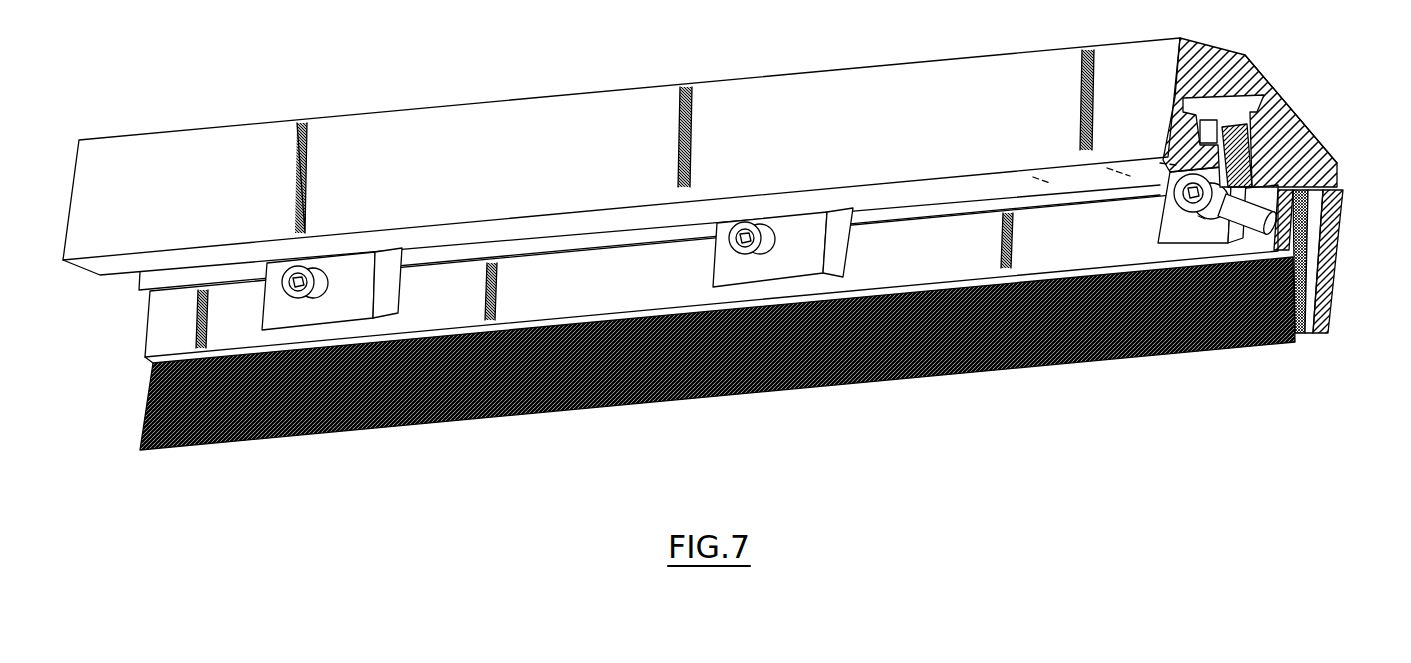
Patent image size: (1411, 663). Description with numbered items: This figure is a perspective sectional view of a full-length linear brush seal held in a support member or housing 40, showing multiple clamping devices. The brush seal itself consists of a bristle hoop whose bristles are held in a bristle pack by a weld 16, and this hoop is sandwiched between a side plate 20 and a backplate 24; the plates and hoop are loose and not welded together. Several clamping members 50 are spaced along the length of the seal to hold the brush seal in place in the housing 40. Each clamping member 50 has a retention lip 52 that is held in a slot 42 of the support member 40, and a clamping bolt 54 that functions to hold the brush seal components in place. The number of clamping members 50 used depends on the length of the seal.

The weld 16 is at (1317, 134).
The side plate 20 is at (1081, 260).
The backplate 24 is at (1340, 240).
The support member 40 is at (1232, 100).
The slot 42 is at (1181, 100).
The clamping member 50 is at (385, 303).
The retention lip 52 is at (1277, 88).
The clamping bolt 54 is at (318, 278).